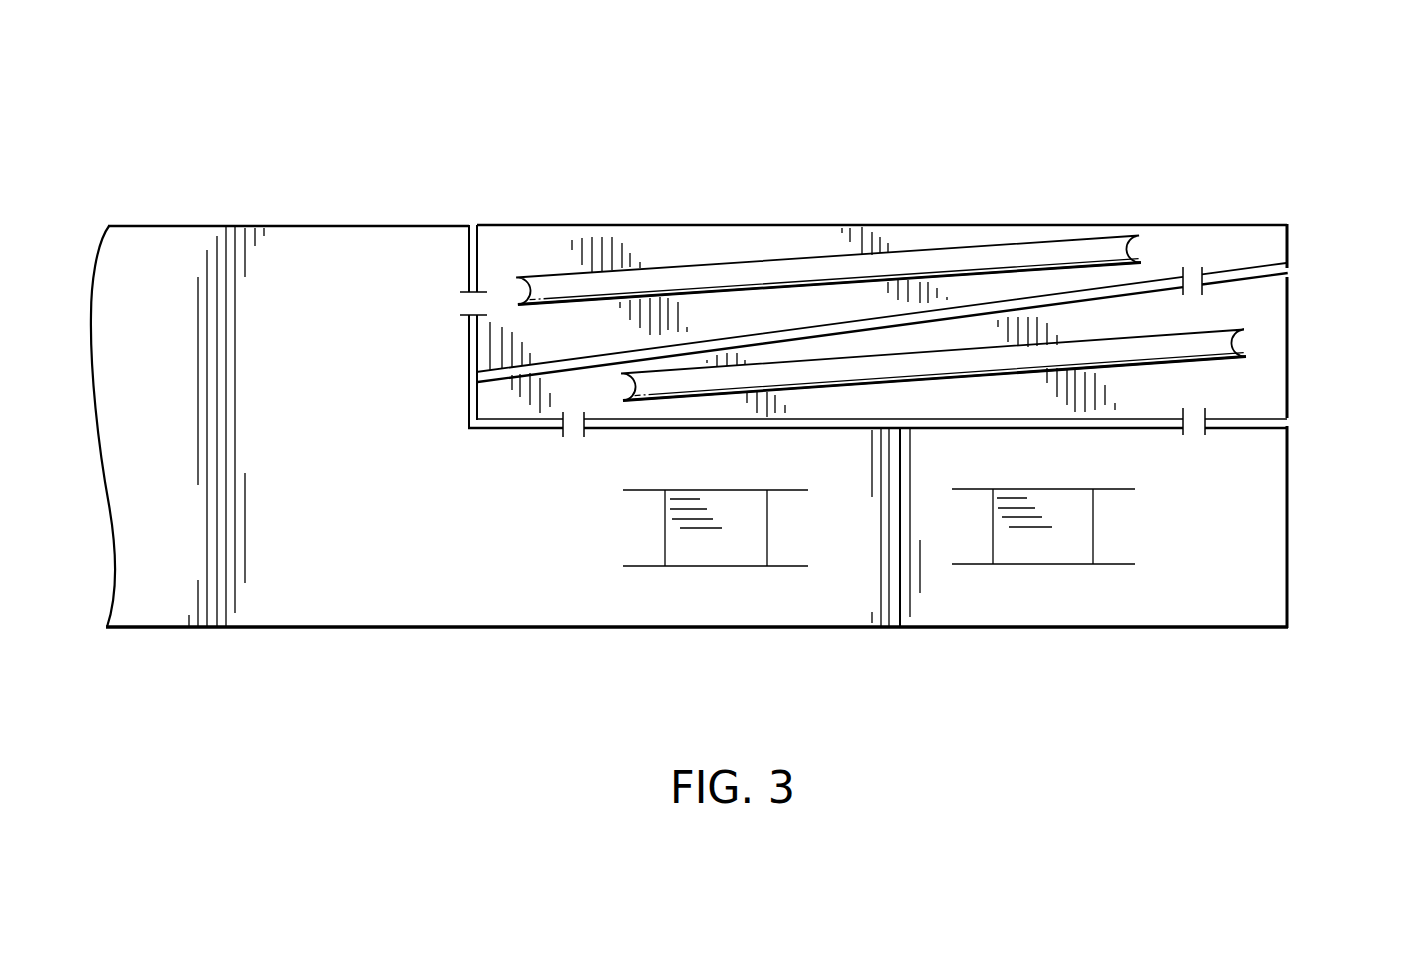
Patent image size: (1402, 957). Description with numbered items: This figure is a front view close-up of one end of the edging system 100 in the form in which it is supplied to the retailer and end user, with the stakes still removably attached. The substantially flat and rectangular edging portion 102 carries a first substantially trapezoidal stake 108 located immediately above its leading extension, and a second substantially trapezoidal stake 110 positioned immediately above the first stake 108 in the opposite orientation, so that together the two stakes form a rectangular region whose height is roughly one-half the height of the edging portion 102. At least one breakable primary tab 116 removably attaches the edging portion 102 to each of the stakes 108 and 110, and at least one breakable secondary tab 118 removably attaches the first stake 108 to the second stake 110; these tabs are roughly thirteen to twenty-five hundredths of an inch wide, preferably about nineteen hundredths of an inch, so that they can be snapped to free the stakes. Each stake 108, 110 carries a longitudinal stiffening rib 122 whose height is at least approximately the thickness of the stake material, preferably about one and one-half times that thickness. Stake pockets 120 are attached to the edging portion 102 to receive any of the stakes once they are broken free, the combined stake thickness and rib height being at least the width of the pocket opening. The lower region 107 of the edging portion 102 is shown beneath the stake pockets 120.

The edging system 100 is at (259, 142).
The edging portion 102 is at (260, 587).
The lower chamber 107 is at (1245, 582).
The first stake 108 is at (1245, 375).
The second stake 110 is at (545, 247).
The primary tab 116 is at (463, 293).
The secondary tab 118 is at (1200, 293).
The stake pocket 120 is at (733, 567).
The stiffening rib 122 is at (1088, 247).